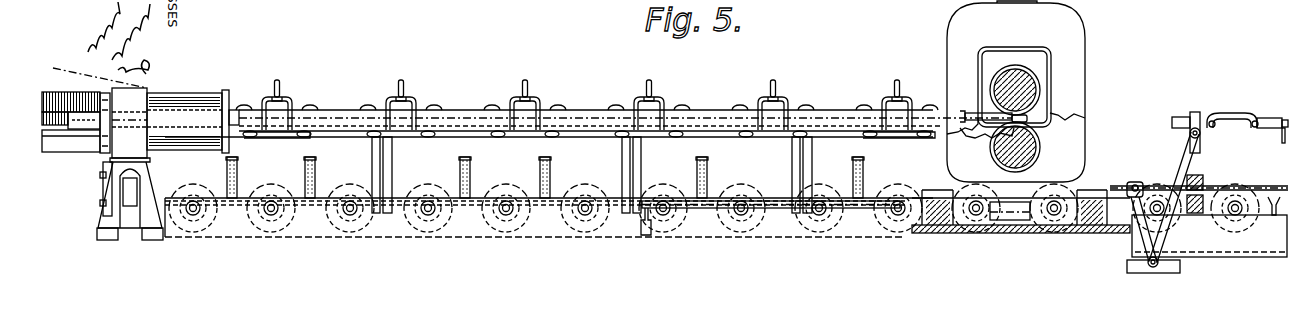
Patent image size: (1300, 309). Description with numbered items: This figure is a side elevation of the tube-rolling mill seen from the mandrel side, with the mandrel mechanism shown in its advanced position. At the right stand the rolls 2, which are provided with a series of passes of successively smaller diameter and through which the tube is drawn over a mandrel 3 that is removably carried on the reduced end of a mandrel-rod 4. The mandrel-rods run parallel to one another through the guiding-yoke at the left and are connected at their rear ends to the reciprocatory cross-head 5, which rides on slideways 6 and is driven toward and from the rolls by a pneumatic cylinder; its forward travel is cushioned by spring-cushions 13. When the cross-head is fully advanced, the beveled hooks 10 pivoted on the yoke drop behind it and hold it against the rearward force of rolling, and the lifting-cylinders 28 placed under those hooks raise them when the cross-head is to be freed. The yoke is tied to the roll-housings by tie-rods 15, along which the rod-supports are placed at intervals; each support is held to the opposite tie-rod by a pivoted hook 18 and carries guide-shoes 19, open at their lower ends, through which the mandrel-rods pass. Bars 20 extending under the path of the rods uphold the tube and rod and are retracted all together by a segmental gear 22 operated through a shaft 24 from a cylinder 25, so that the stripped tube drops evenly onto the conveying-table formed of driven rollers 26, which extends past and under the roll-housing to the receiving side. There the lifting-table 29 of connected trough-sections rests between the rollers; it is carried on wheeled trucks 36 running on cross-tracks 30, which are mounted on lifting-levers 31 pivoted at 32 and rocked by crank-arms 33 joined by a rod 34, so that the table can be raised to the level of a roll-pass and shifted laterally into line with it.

The rolls 2 is at (1037, 88).
The mandrel 3 is at (1010, 116).
The mandrel-rod 4 is at (1016, 133).
The cross-head 5 is at (78, 124).
The slideways 6 is at (82, 140).
The locks or hooks 10 is at (71, 100).
The spring-cushions 13 is at (170, 108).
The tie-rods 15 is at (572, 114).
The pivoted lock or hook 18 is at (404, 85).
The guide-shoes 19 is at (278, 138).
The bars 20 is at (372, 133).
The segmental gear 22 is at (372, 153).
The shaft 24 is at (697, 209).
The cylinder 25 is at (421, 194).
The conveying-table rollers 26 is at (580, 190).
The lifting-cylinders 28 is at (104, 186).
The lifting-table 29 is at (1232, 134).
The cross rails or tracks 30 is at (1190, 135).
The lifting-levers 31 is at (1183, 170).
The pivot 32 is at (1150, 270).
The crank-arms 33 is at (1140, 218).
The rod 34 is at (1277, 194).
The slides or wheeled trucks 36 is at (1198, 118).